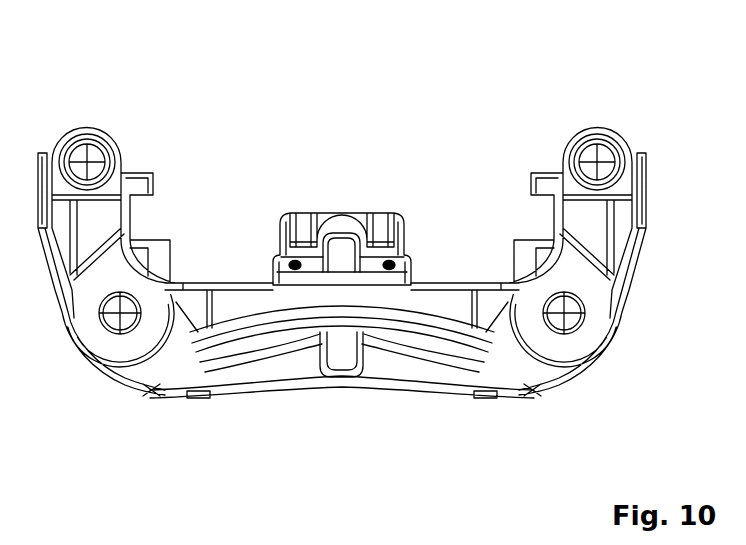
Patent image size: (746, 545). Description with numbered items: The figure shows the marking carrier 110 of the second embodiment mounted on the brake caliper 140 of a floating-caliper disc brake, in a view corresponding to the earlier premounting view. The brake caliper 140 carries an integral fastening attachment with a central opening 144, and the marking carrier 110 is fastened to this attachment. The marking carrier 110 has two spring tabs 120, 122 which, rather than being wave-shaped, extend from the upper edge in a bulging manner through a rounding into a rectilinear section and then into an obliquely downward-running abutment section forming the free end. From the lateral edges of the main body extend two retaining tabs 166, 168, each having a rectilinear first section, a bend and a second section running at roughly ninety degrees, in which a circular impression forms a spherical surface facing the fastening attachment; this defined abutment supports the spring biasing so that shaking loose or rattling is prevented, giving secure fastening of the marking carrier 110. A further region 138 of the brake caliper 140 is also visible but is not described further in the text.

The marking carrier 110 is at (337, 200).
The spring tab 120 is at (283, 213).
The spring tab 122 is at (397, 214).
The central opening 144 is at (350, 245).
The retaining tab 166 is at (273, 260).
The retaining tab 168 is at (412, 256).
The recess 138 is at (320, 380).
The brake caliper 140 is at (490, 378).